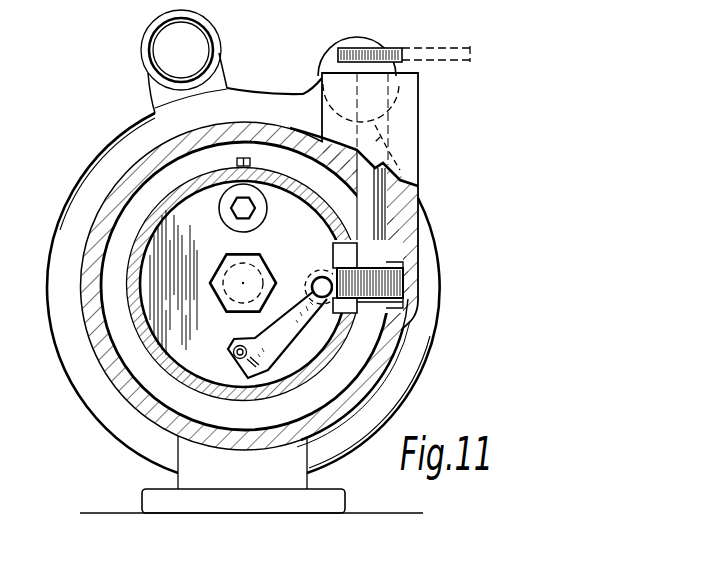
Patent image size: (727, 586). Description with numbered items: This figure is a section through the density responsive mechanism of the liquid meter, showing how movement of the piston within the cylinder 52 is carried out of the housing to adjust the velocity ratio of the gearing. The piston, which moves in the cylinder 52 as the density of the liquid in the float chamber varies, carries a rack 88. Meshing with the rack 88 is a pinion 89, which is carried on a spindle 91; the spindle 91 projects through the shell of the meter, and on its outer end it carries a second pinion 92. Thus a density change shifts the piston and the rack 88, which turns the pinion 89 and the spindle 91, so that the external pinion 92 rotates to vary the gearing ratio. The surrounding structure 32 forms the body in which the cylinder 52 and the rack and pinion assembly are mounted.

The housing 32 is at (137, 405).
The cylinder 52 is at (152, 212).
The rack 88 is at (358, 308).
The pinion 89 is at (393, 288).
The spindle 91 is at (375, 212).
The pinion 92 is at (395, 62).